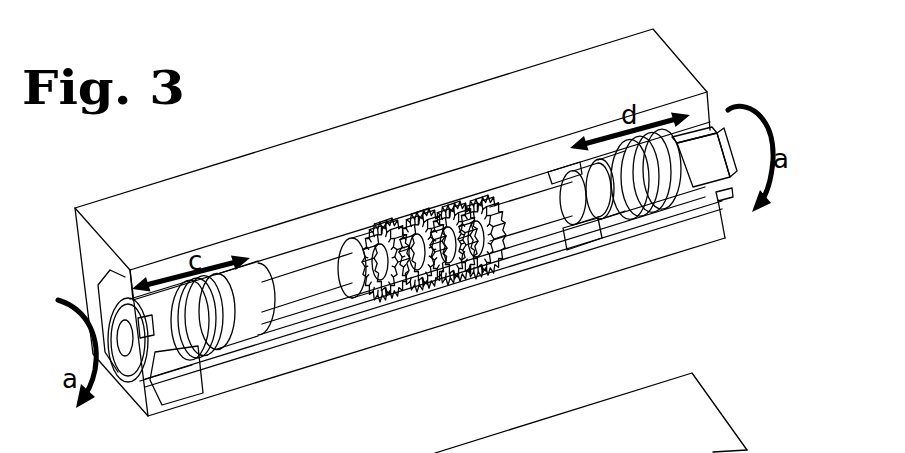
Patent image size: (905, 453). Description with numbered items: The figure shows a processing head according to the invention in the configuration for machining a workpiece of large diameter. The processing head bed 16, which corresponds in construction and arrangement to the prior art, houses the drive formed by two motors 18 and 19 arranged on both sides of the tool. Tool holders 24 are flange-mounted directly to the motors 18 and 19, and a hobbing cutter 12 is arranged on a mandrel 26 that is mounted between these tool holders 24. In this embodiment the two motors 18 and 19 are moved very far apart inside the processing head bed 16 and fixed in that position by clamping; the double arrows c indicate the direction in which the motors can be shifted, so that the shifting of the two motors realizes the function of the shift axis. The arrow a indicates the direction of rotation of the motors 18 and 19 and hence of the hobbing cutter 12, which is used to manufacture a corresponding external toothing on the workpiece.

The processing head bed 16 is at (438, 125).
The motor 19 is at (190, 347).
The tool holder 24 is at (248, 325).
The hobbing cutter 12 is at (462, 283).
The mandrel 26 is at (525, 208).
The motor 18 is at (692, 187).